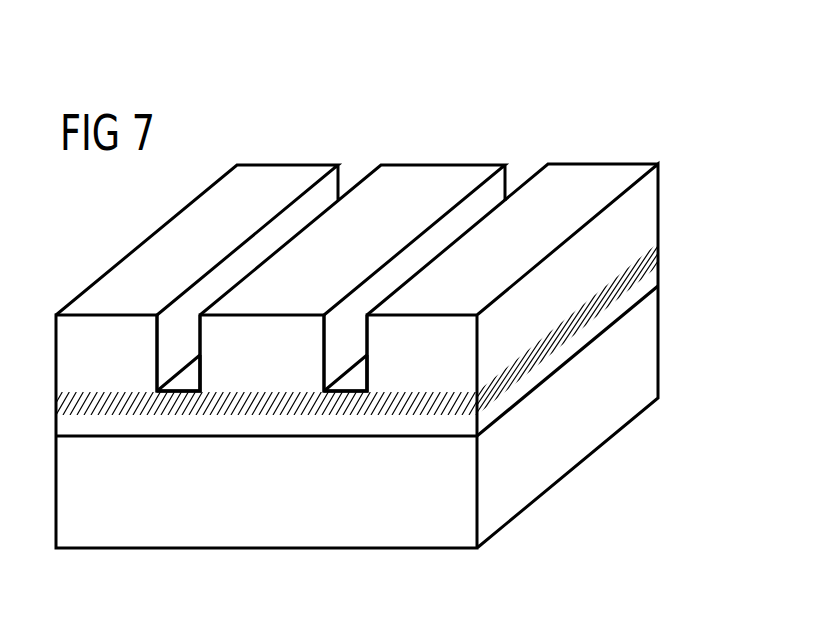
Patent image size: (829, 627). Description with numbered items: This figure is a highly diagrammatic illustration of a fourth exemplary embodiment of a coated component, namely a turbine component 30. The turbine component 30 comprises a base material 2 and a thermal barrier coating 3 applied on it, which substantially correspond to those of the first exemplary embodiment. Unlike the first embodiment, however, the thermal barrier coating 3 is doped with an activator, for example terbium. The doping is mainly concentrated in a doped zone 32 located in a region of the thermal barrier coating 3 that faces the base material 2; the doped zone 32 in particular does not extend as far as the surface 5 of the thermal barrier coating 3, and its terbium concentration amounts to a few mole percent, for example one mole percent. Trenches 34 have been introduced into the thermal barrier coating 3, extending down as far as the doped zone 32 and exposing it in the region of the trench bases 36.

The turbine component 30 is at (411, 327).
The base material 2 is at (643, 355).
The thermal barrier coating 3 is at (381, 271).
The doped zone 32 is at (650, 258).
The surface 5 is at (598, 186).
The trenches 34 is at (225, 287).
The trench bases 36 is at (187, 389).